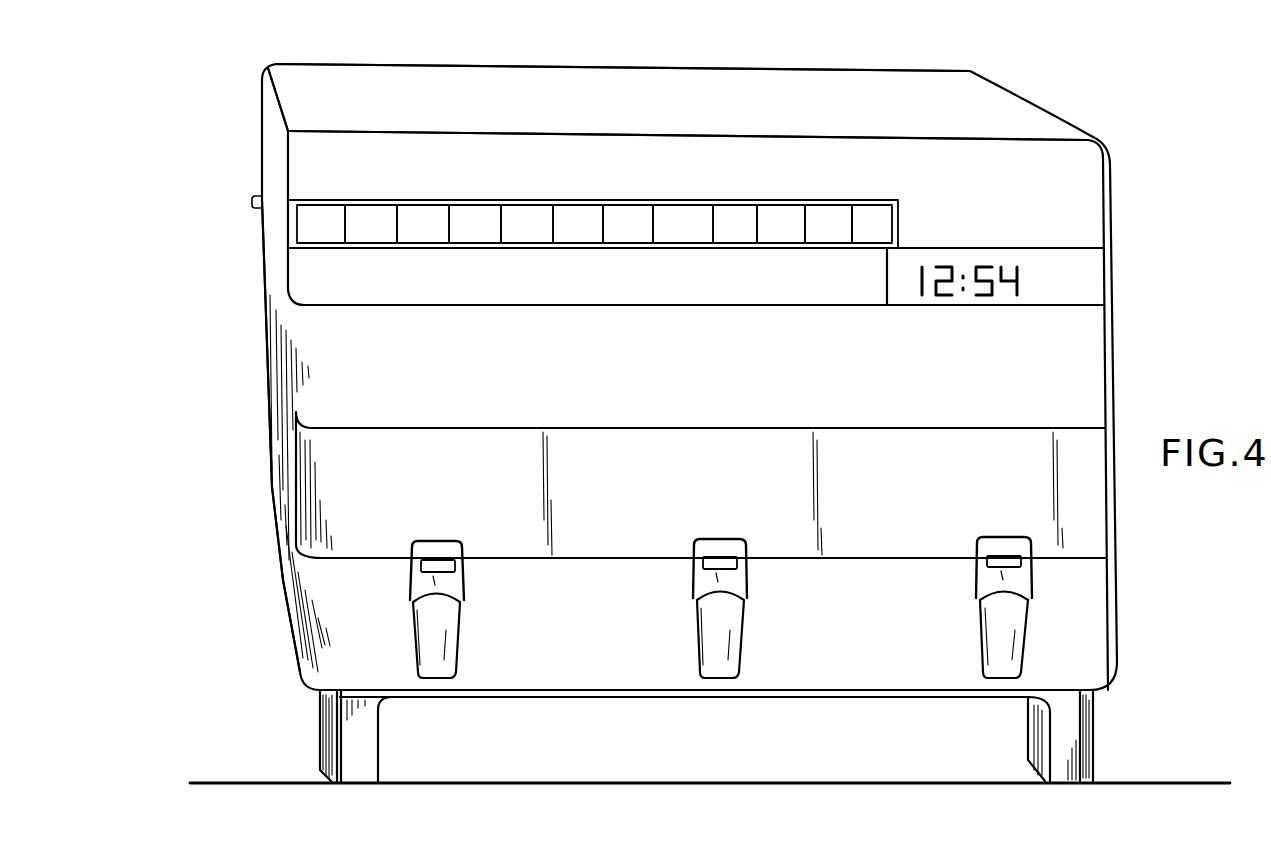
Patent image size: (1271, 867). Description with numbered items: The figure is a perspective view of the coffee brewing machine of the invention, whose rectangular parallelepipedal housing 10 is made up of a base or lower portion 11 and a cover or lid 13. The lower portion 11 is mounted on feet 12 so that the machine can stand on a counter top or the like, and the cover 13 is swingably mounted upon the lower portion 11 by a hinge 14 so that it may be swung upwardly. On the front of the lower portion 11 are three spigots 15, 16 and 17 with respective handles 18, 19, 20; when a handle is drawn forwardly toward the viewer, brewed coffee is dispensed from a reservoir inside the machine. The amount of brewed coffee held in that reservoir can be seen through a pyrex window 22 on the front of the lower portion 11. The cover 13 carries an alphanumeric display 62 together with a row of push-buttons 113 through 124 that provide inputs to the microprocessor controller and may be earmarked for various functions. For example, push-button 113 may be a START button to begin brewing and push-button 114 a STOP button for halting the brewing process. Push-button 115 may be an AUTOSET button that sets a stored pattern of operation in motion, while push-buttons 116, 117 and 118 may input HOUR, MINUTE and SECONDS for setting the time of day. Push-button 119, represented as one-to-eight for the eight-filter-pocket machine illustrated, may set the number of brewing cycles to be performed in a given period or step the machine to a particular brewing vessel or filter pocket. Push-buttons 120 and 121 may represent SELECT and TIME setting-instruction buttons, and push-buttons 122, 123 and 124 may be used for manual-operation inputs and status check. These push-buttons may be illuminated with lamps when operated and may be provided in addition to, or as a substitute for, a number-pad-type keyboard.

The housing 10 is at (1100, 140).
The lower portion 11 is at (268, 365).
The feet 12 is at (330, 728).
The cover 13 is at (292, 77).
The hinge 14 is at (253, 203).
The spigot 15 is at (445, 638).
The spigot 16 is at (728, 638).
The spigot 17 is at (1012, 640).
The handle 18 is at (418, 578).
The handle 19 is at (692, 578).
The handle 20 is at (976, 567).
The pyrex window 22 is at (296, 490).
The alphanumeric display 62 is at (1064, 248).
The push-button 113 is at (320, 213).
The push-button 114 is at (371, 213).
The push-button 115 is at (426, 214).
The push-button 116 is at (479, 214).
The push-button 117 is at (531, 214).
The push-button 118 is at (580, 214).
The push-button 119 is at (628, 214).
The push-button 120 is at (681, 212).
The push-button 121 is at (735, 212).
The push-button 122 is at (784, 212).
The push-button 123 is at (828, 212).
The push-button 124 is at (875, 212).